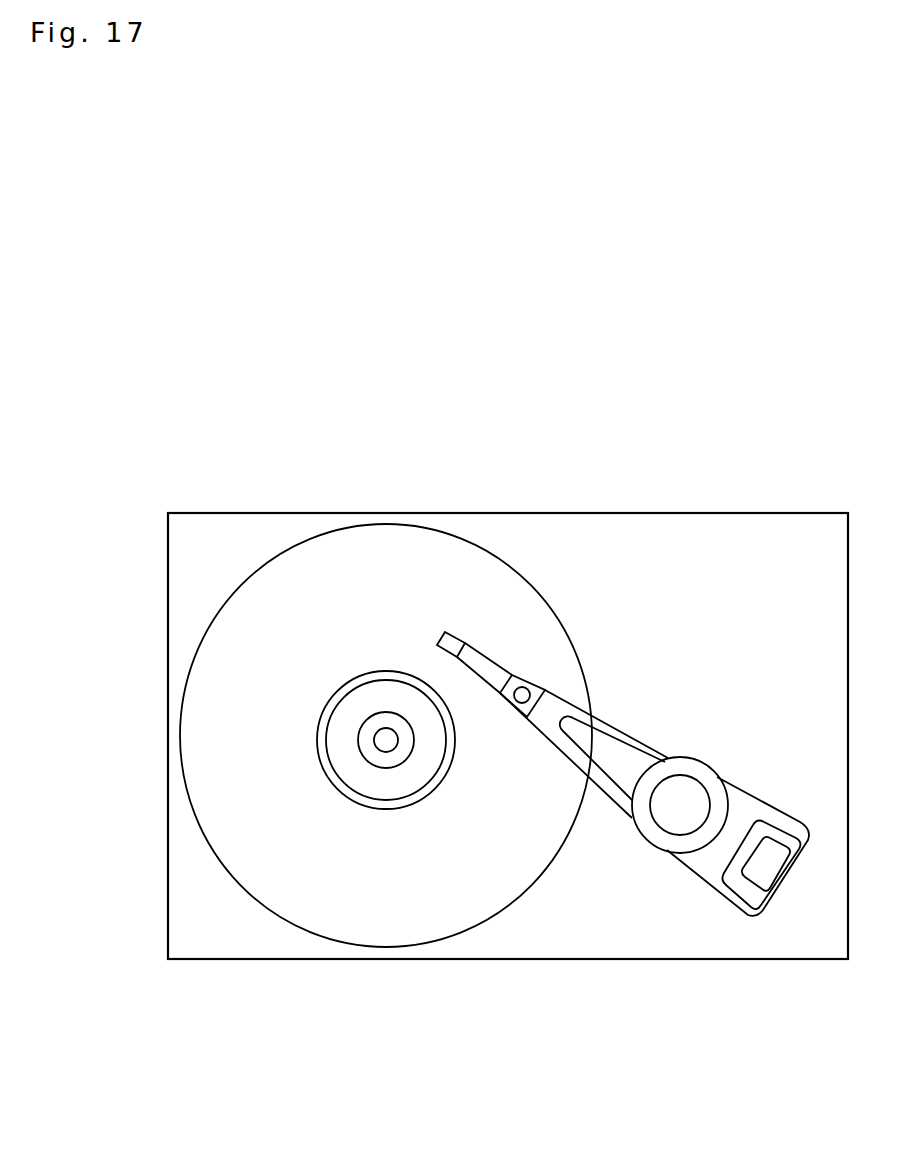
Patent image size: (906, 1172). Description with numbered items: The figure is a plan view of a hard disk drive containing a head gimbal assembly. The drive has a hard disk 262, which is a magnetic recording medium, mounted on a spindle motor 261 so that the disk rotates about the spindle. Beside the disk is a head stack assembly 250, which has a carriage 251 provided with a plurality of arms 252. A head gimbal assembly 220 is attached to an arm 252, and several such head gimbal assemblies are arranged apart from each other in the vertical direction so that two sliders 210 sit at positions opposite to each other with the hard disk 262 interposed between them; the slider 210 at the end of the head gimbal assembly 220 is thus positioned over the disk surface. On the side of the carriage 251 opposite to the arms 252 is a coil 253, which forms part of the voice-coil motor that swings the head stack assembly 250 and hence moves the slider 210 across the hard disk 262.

The slider 210 is at (461, 636).
The head gimbal assembly 220 is at (491, 694).
The head stack assembly 250 is at (684, 880).
The carriage 251 is at (690, 758).
The arm 252 is at (587, 790).
The coil 253 is at (801, 880).
The spindle motor 261 is at (386, 752).
The hard disk 262 is at (310, 938).